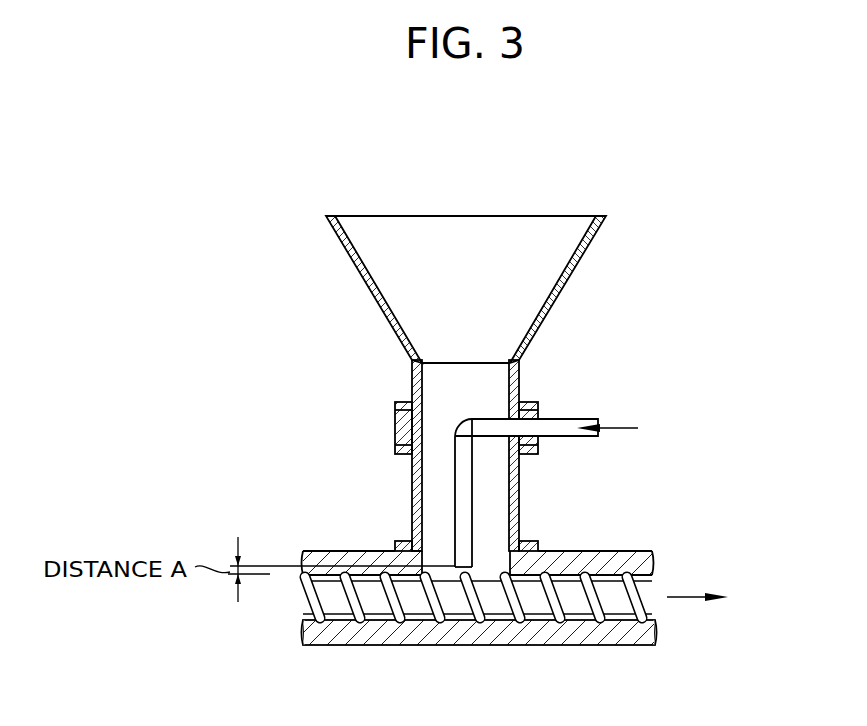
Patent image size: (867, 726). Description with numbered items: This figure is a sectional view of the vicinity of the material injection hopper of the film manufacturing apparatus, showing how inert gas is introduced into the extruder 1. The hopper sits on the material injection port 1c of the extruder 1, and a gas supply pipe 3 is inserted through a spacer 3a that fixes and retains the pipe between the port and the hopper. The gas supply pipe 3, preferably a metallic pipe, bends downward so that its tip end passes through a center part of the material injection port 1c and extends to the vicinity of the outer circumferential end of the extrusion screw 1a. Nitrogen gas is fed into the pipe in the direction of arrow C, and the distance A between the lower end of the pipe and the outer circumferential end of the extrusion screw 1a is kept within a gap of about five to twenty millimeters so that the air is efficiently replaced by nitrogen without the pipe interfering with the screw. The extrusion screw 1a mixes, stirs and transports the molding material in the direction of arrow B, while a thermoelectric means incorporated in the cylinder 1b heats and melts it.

The extruder 1 is at (479, 603).
The extrusion screw 1a is at (570, 590).
The cylinder 1b is at (595, 633).
The material injection port 1c is at (430, 431).
The gas supply pipe 3 is at (573, 419).
The spacer 3a is at (527, 418).
The transport direction arrow B is at (708, 597).
The gas supply direction arrow C is at (618, 429).